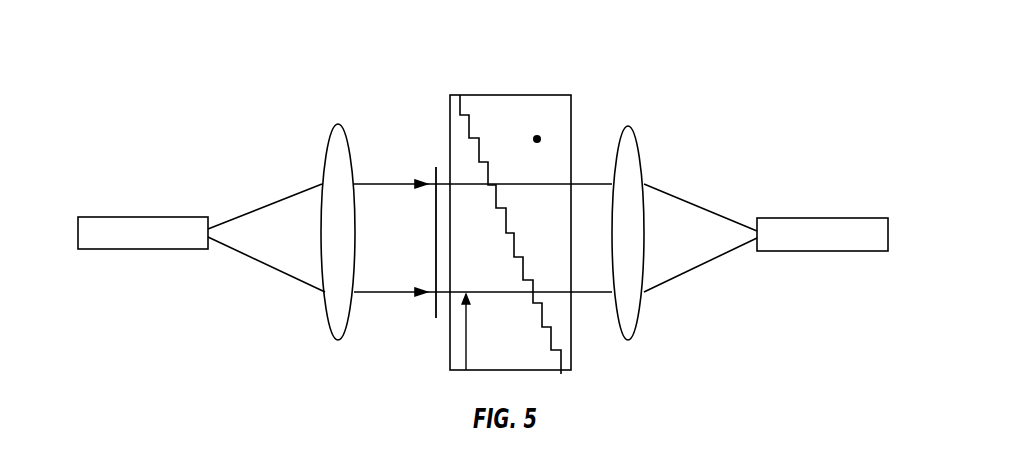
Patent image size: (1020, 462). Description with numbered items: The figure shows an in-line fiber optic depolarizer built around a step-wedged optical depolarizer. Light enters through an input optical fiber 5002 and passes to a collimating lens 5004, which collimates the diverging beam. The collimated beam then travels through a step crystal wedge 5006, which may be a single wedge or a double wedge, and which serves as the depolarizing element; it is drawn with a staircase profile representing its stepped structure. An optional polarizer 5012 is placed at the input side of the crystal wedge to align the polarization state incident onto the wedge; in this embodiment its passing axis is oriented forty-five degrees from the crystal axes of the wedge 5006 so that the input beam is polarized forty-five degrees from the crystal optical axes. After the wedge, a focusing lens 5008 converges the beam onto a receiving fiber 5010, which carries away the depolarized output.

The input optical fiber 5002 is at (173, 217).
The collimating lens 5004 is at (339, 125).
The step crystal wedge 5006 is at (449, 105).
The focusing lens 5008 is at (627, 127).
The receiving fiber 5010 is at (797, 218).
The polarizer 5012 is at (437, 318).